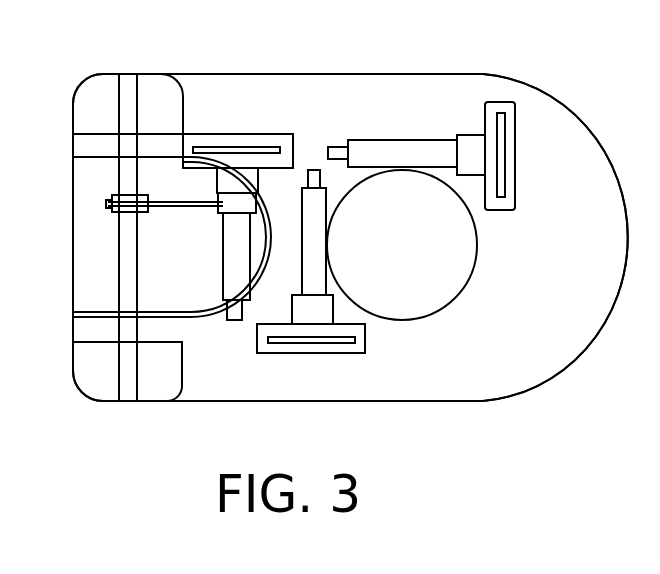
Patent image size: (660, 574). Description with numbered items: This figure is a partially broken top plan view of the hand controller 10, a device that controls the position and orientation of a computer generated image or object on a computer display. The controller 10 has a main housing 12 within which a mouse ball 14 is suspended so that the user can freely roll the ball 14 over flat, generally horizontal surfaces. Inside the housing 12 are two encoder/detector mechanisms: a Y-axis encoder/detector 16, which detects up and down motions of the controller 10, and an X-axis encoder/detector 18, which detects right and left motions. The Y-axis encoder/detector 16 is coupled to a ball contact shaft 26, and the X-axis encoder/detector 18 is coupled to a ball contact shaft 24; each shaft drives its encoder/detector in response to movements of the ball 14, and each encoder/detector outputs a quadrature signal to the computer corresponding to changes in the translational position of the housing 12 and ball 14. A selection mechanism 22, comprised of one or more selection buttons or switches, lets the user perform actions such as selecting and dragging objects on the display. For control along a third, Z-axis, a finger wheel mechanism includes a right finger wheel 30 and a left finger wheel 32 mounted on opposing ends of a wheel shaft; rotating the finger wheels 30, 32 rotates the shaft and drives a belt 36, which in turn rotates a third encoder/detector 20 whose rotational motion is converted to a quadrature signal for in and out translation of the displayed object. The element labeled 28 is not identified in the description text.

The hand controller 10 is at (560, 292).
The main housing 12 is at (508, 382).
The mouse ball 14 is at (432, 293).
The Y-axis encoder/detector 16 is at (325, 347).
The X-axis encoder/detector 18 is at (507, 157).
The third encoder/detector 20 is at (238, 140).
The selection mechanism 22 is at (88, 295).
The ball contact shaft 24 is at (388, 148).
The ball contact shaft 26 is at (305, 213).
The shaft 28 is at (227, 282).
The right finger wheel 30 is at (153, 88).
The left finger wheel 32 is at (147, 400).
The belt 36 is at (183, 208).